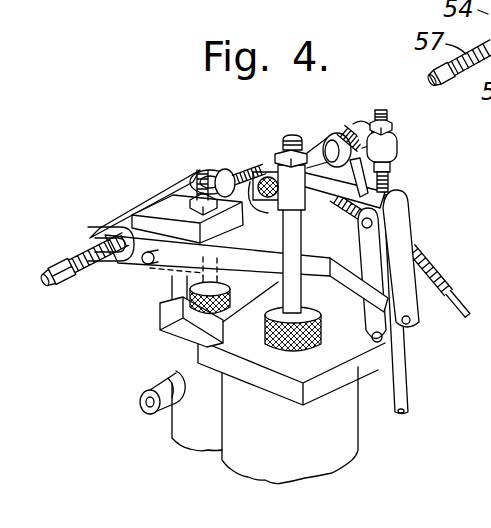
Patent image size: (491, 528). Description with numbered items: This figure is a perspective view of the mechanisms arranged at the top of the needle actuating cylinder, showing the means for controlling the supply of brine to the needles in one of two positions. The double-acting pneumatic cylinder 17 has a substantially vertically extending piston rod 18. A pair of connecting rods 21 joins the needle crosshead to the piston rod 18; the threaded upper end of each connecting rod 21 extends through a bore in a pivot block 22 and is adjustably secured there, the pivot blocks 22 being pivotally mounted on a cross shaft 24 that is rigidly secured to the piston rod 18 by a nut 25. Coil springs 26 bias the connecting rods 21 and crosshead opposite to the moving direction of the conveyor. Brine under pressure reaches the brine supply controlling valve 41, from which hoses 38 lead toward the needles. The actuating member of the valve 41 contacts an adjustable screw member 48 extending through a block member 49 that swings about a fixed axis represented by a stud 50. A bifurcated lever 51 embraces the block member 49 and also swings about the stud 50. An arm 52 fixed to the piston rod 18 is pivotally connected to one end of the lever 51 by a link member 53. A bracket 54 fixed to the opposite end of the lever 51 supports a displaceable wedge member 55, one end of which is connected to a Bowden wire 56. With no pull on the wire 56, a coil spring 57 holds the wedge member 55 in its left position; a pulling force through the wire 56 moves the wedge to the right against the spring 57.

The double-acting pneumatic cylinder 17 is at (345, 442).
The piston rod 18 is at (252, 174).
The connecting rod 21 is at (407, 380).
The pivot block 22 is at (398, 146).
The cross shaft 24 is at (316, 148).
The nut 25 is at (282, 150).
The coil spring 26 is at (352, 134).
The hose 38 is at (146, 392).
The brine supply controlling valve 41 is at (172, 434).
The adjustable screw member 48 is at (196, 172).
The block member 49 is at (186, 222).
The stud 50 is at (143, 262).
The bifurcated lever 51 is at (176, 338).
The arm 52 is at (363, 197).
The link member 53 is at (404, 236).
The bracket 54 is at (90, 228).
The wedge member 55 is at (130, 200).
The Bowden wire 56 is at (441, 274).
The coil spring 57 is at (76, 257).